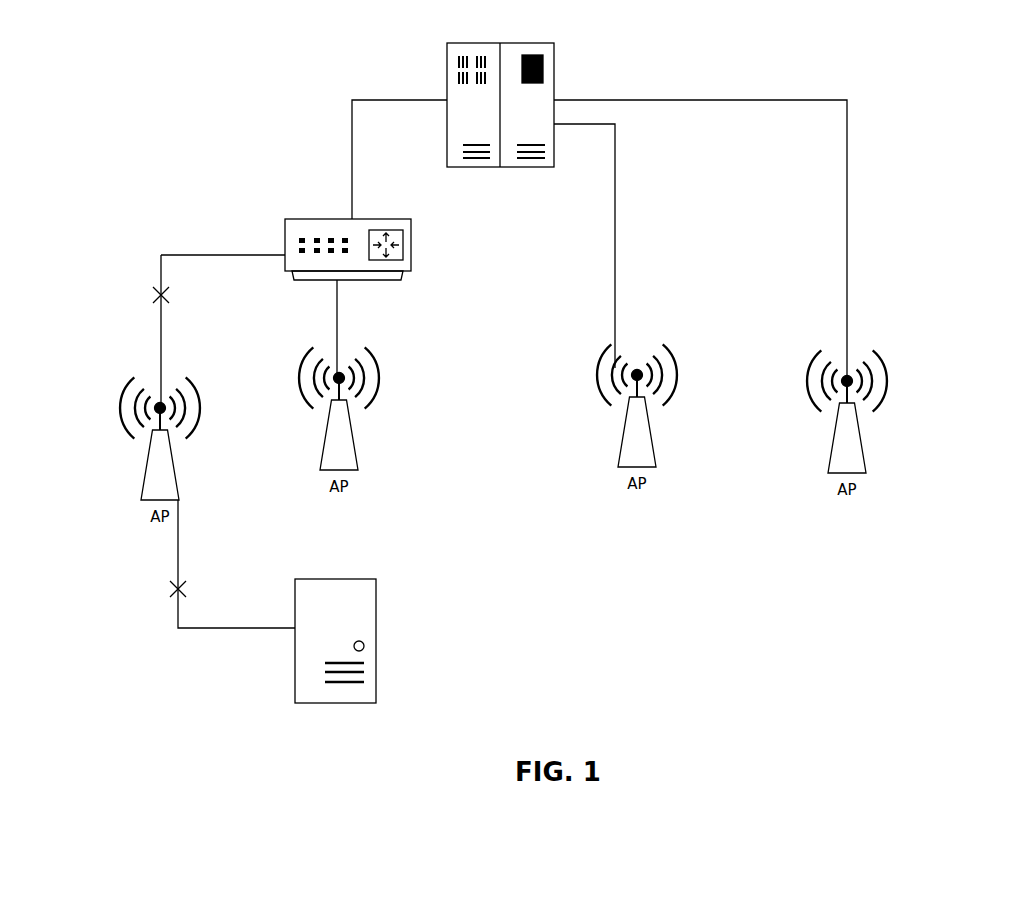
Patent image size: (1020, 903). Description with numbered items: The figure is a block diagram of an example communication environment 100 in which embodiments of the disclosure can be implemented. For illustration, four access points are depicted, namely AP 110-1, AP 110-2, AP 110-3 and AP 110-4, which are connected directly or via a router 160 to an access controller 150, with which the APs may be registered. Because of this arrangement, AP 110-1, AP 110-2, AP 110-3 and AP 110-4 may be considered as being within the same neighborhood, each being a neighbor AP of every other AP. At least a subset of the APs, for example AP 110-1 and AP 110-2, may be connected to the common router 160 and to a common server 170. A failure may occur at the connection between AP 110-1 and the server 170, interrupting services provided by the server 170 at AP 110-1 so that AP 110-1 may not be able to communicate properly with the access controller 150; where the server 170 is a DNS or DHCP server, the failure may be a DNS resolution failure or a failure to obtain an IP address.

The communication environment 100 is at (334, 46).
The AP 110-1 is at (130, 383).
The AP 110-2 is at (310, 352).
The AP 110-3 is at (665, 352).
The AP 110-4 is at (875, 355).
The access controller 150 is at (556, 72).
The router 160 is at (318, 219).
The server 170 is at (320, 579).